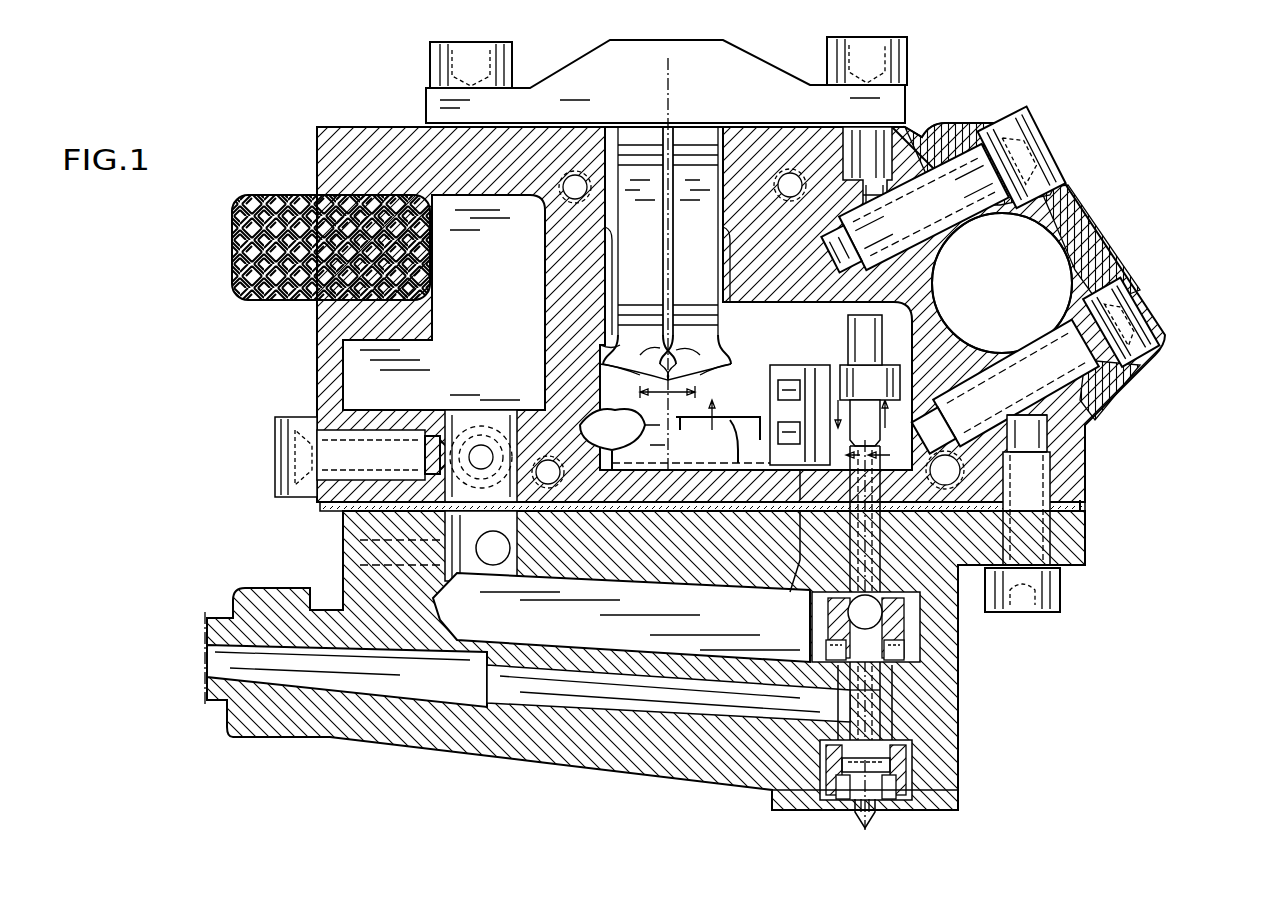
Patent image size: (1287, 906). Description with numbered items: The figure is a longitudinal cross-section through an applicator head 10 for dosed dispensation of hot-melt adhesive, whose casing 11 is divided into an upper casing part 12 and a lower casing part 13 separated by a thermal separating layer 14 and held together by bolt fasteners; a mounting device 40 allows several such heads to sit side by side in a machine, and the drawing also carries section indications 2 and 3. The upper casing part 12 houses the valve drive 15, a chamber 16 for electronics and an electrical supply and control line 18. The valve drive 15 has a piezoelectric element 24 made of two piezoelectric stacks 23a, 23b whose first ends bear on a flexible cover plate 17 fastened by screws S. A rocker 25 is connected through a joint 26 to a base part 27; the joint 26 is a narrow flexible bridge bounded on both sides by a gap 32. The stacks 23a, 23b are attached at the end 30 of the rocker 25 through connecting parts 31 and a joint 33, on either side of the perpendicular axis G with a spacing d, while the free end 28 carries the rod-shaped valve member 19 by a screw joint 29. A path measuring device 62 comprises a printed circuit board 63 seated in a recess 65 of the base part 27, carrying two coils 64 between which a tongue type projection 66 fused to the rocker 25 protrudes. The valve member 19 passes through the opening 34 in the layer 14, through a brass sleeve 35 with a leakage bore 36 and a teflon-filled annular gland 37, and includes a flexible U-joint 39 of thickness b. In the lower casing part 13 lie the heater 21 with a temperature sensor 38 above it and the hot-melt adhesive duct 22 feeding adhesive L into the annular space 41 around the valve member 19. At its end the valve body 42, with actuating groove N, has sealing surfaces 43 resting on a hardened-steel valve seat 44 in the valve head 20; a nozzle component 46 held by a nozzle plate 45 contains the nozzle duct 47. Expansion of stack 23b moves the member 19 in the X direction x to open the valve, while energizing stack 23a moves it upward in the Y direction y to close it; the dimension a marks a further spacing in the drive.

The sectional view direction 2 is at (1212, 320).
The viewing direction 3 is at (145, 405).
The applicator head 10 is at (1085, 105).
The casing 11 is at (972, 112).
The casing part 12 is at (178, 318).
The casing part 13 is at (185, 522).
The thermal separating layer 14 is at (320, 507).
The valve drive 15 is at (747, 320).
The chamber 16 is at (474, 277).
The flexible cover plate 17 is at (578, 85).
The electrical supply and control line 18 is at (262, 195).
The rod-shaped valve member 19 is at (896, 470).
The valve head 20 is at (1038, 707).
The heater 21 is at (612, 647).
The hot-melt adhesive duct 22 is at (210, 650).
The piezoelectric stack 23a is at (636, 185).
The piezoelectric stack 23b is at (703, 185).
The piezoelectric element 24 is at (678, 122).
The rocker 25 is at (739, 367).
The joint 26 is at (610, 410).
The base part 27 is at (675, 456).
The free end 28 is at (940, 300).
The screw joint 29 is at (970, 382).
The end 30 is at (617, 346).
The connecting parts 31 is at (643, 340).
The gap 32 is at (742, 441).
The joint 33 is at (640, 360).
The opening 34 is at (1087, 506).
The brass sleeve 35 is at (962, 585).
The leakage bore 36 is at (905, 620).
The teflon-filled annular gland 37 is at (920, 660).
The temperature sensor 38 is at (622, 565).
The flexible U-joint 39 is at (1050, 446).
The mounting device 40 is at (1090, 185).
The annular space 41 is at (930, 740).
The valve body 42 is at (906, 760).
The sealing surfaces 43 is at (805, 805).
The valve seat 44 is at (826, 748).
The nozzle plate 45 is at (940, 800).
The nozzle component 46 is at (882, 805).
The nozzle duct 47 is at (866, 830).
The path measuring device 62 is at (795, 340).
The printed circuit board 63 is at (880, 380).
The coils 64 is at (778, 388).
The recess 65 is at (802, 478).
The tongue type projection 66 is at (810, 386).
The screws S is at (430, 56).
The perpendicular axis G is at (666, 66).
The air L is at (868, 698).
The actuating groove N is at (858, 800).
The distance a is at (718, 407).
The thickness b is at (858, 457).
The spacing d is at (667, 379).
The X direction x is at (830, 410).
The Y direction y is at (891, 410).